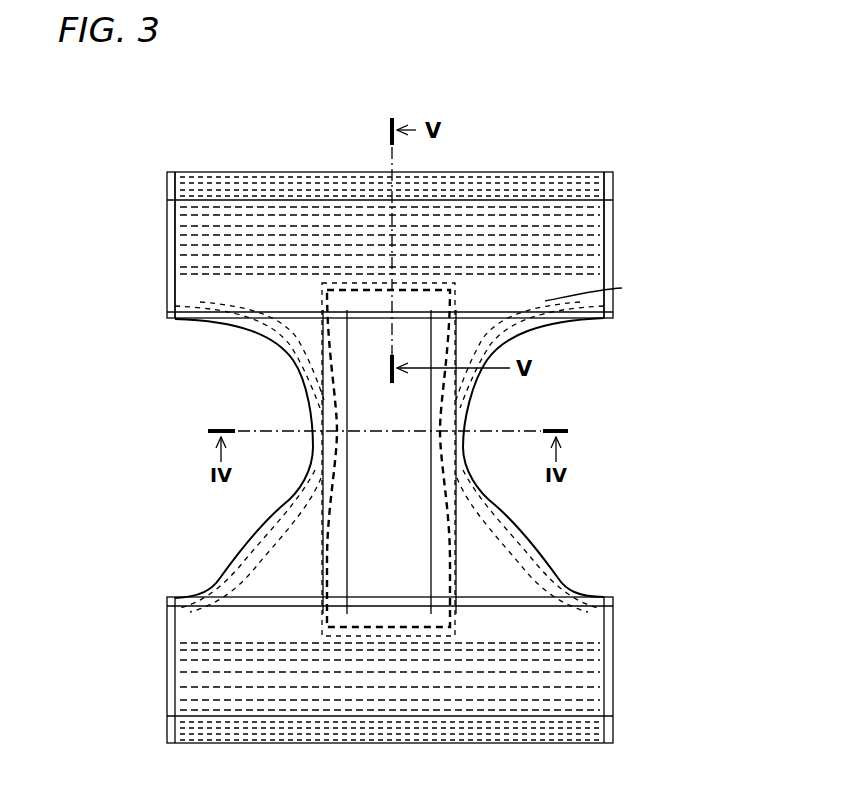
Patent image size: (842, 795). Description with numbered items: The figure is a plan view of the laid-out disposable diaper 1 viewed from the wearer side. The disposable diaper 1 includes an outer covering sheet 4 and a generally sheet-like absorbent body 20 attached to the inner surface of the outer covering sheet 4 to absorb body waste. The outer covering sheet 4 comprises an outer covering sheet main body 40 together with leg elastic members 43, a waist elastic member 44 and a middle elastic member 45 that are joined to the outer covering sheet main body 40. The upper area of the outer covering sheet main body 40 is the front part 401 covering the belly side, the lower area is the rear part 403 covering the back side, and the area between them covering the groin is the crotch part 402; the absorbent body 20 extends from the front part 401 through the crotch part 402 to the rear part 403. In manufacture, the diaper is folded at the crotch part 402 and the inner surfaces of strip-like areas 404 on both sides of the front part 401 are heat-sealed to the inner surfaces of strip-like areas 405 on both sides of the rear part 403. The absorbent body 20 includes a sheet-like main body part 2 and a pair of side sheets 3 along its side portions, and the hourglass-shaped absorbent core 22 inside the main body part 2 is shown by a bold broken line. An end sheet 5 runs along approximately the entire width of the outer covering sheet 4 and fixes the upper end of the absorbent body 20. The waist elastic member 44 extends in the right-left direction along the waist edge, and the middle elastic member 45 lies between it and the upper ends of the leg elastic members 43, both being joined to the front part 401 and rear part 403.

The disposable diaper 1 is at (150, 128).
The main body part 2 is at (590, 507).
The absorbent body 20 is at (625, 478).
The absorbent core 22 is at (463, 522).
The side sheets 3 is at (340, 494).
The outer covering sheet 4 is at (737, 256).
The outer covering sheet main body 40 is at (653, 286).
The front part 401 is at (237, 223).
The crotch part 402 is at (312, 405).
The rear part 403 is at (237, 677).
The strip-like areas 404 is at (170, 243).
The strip-like areas 405 is at (170, 662).
The leg elastic members 43 is at (535, 324).
The waist elastic member 44 is at (558, 184).
The middle elastic member 45 is at (608, 206).
The end sheet 5 is at (625, 628).